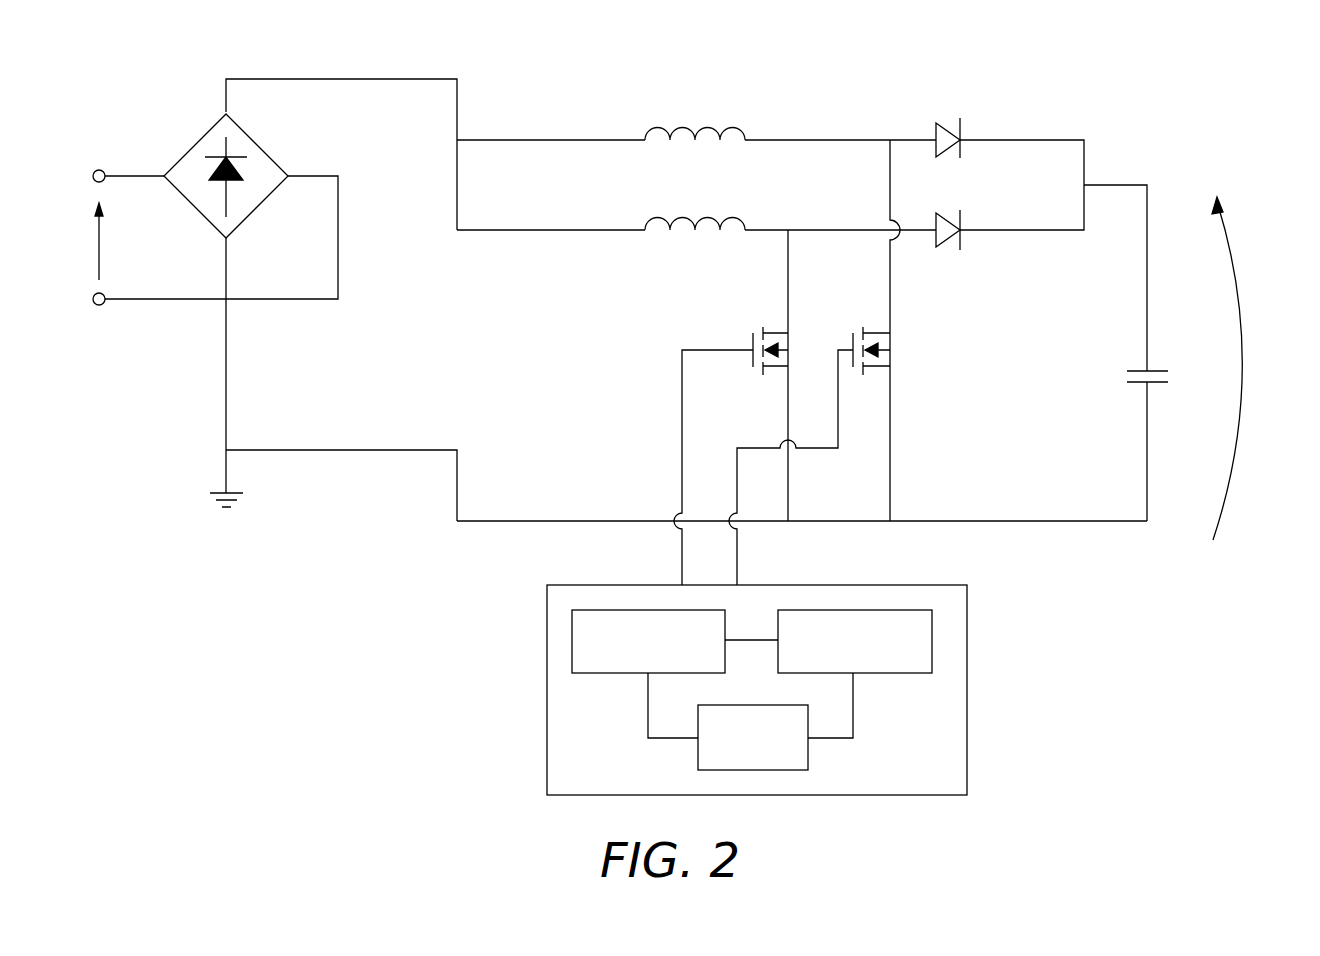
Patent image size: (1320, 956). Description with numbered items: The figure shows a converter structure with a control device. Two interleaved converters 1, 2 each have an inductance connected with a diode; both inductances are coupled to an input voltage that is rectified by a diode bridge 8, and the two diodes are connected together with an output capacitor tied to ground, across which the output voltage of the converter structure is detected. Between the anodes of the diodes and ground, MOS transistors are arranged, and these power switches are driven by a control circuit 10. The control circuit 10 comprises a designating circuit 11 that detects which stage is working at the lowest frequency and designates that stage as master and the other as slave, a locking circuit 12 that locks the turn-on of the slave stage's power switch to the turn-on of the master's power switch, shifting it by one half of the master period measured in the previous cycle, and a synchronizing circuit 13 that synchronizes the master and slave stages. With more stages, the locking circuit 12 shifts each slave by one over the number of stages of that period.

The interleaved converter 1 is at (562, 78).
The interleaved converter 2 is at (588, 260).
The diode bridge 8 is at (215, 142).
The control circuit 10 is at (622, 583).
The designating circuit 11 is at (572, 640).
The locking circuit 12 is at (808, 753).
The synchronizing circuit 13 is at (932, 640).